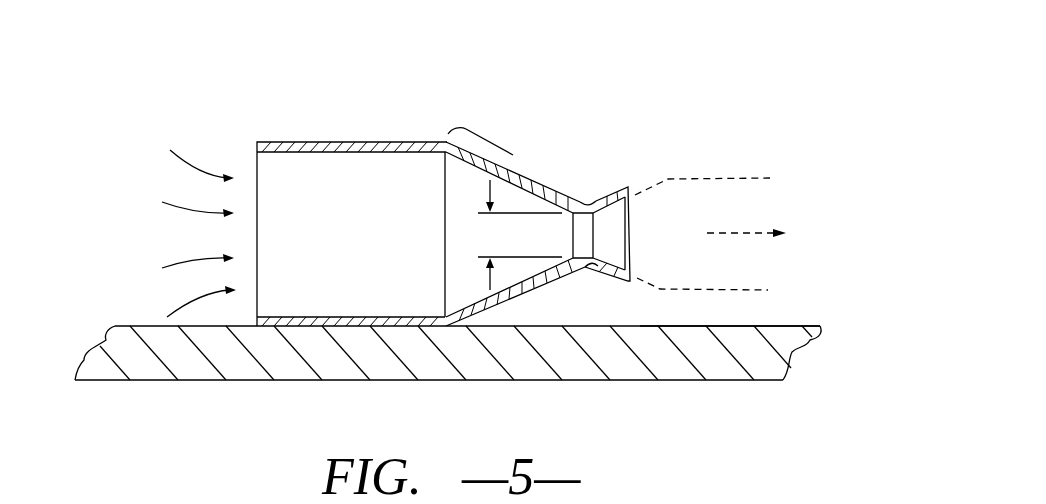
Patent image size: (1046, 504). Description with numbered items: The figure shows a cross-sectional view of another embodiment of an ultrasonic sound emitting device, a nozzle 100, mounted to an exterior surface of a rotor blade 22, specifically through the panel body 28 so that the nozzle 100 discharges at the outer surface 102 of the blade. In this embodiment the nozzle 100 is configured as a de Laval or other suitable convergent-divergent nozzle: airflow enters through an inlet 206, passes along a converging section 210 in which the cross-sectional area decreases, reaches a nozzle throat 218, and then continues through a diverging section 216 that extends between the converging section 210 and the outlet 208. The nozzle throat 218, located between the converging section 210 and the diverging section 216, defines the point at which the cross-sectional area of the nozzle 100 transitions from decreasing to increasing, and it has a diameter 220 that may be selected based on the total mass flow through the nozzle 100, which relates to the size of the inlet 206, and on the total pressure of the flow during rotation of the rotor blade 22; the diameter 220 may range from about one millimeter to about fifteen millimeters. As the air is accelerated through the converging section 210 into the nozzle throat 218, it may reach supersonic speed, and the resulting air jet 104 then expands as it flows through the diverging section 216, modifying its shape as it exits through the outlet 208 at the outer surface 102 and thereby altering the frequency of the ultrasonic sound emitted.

The nozzle 100 is at (498, 171).
The rotor blade 22 is at (464, 359).
The panel body 28 is at (753, 352).
The outer surface 102 is at (762, 323).
The air jet 104 is at (748, 177).
The inlet 206 is at (257, 170).
The outlet 208 is at (633, 213).
The converging section 210 is at (582, 197).
The diverging section 216 is at (615, 195).
The nozzle throat 218 is at (582, 248).
The diameter 220 is at (488, 180).